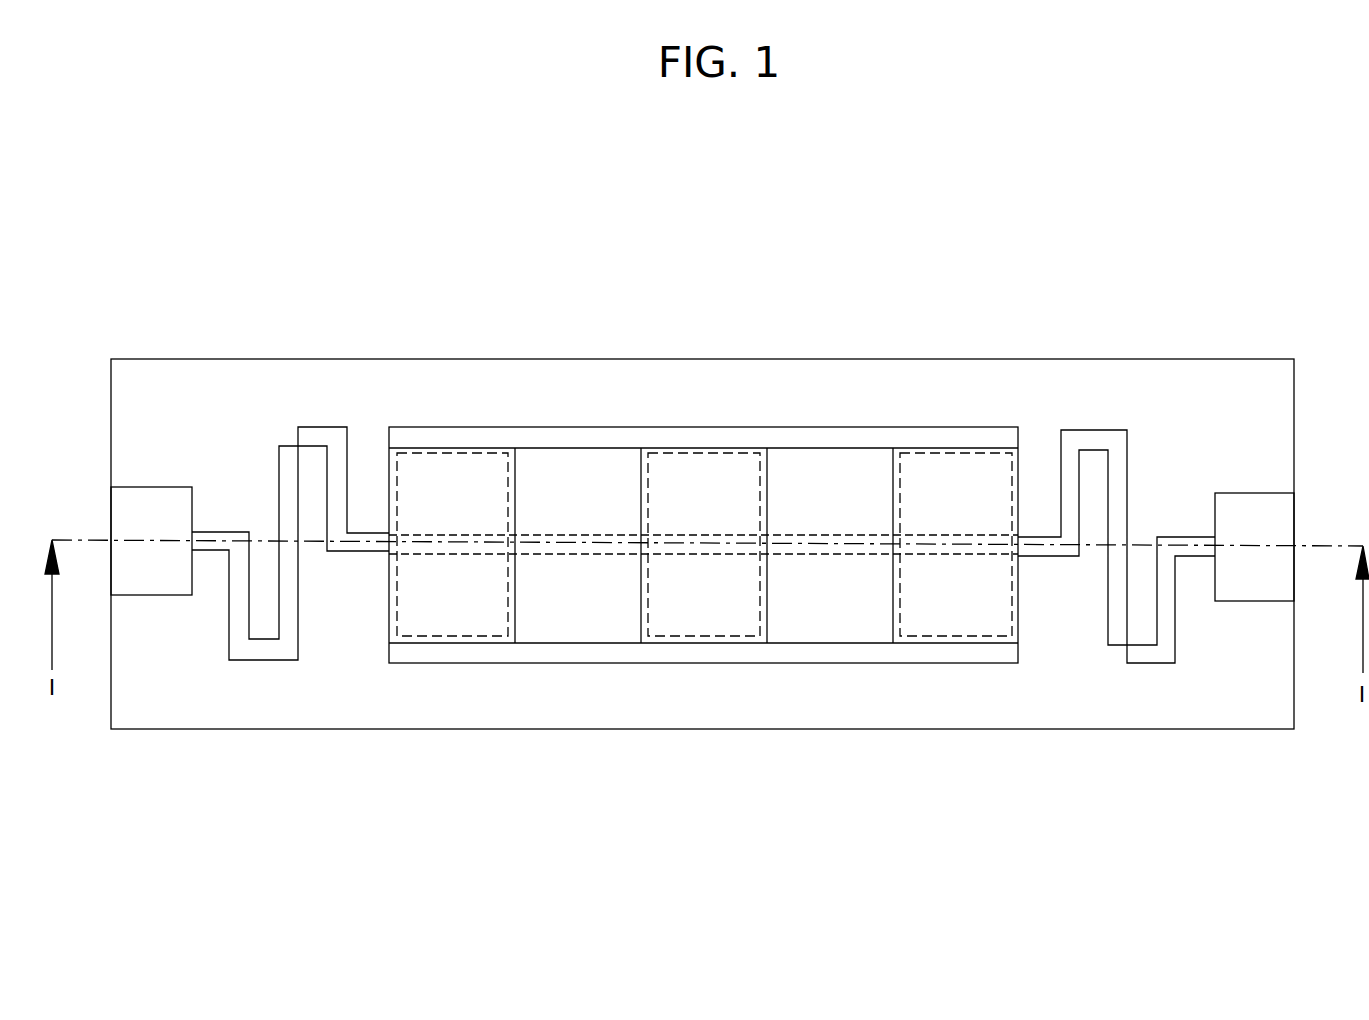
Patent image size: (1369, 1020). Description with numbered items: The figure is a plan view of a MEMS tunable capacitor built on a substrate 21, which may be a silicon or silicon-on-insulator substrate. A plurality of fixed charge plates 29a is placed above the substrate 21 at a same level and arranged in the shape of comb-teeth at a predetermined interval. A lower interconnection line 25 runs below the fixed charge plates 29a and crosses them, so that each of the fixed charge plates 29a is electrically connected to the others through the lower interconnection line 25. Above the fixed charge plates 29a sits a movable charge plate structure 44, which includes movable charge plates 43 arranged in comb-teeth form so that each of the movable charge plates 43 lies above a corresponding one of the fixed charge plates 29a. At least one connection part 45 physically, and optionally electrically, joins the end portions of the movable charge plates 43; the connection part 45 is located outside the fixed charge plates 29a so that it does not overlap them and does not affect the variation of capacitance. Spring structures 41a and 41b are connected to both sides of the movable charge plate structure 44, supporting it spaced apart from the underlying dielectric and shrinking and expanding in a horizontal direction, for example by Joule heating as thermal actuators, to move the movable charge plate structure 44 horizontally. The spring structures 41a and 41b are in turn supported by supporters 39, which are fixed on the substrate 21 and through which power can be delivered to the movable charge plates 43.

The substrate 21 is at (1295, 405).
The lower interconnection line 25 is at (588, 556).
The fixed charge plates 29a is at (452, 638).
The supporters 39 is at (132, 501).
The spring structure 41a is at (270, 652).
The spring structure 41b is at (1143, 655).
The movable charge plates 43 is at (893, 508).
The movable charge plate structure 44 is at (695, 307).
The connection part 45 is at (861, 442).